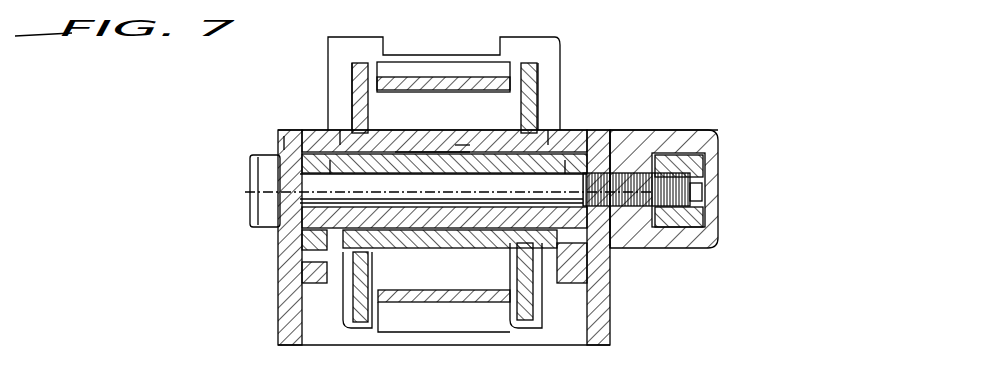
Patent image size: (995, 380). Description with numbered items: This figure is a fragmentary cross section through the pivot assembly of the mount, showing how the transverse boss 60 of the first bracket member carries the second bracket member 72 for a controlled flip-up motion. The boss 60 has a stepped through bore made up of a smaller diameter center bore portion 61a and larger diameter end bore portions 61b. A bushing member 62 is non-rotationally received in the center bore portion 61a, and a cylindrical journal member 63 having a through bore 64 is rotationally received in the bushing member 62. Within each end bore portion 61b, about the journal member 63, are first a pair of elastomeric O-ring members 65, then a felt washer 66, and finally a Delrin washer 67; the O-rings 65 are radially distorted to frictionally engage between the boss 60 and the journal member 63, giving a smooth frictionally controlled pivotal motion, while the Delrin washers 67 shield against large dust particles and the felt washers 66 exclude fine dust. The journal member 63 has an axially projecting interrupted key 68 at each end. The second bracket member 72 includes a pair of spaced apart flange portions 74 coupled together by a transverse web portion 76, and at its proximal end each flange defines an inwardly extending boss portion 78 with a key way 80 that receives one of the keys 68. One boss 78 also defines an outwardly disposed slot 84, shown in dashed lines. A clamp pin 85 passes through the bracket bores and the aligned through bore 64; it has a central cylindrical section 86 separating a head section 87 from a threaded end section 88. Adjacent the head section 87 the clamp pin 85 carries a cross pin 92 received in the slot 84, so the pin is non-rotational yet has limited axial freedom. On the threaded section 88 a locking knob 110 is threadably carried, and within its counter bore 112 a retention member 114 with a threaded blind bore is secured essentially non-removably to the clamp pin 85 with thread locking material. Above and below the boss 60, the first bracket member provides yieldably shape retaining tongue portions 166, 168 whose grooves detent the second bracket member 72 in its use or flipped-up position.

The transverse boss 60 is at (422, 138).
The center bore portion 61a is at (460, 147).
The end bore portions 61b is at (498, 295).
The bushing member 62 is at (442, 170).
The cylindrical journal member 63 is at (403, 138).
The through bore 64 is at (498, 292).
The elastomeric O-ring members 65 is at (402, 168).
The felt washer 66 is at (357, 168).
The Delrin washer 67 is at (340, 125).
The interrupted key 68 is at (312, 133).
The second bracket member 72 is at (327, 262).
The flange portions 74 is at (300, 322).
The transverse web portion 76 is at (520, 342).
The boss portion 78 is at (300, 280).
The key way 80 is at (348, 138).
The slot 84 is at (265, 192).
The clamp pin 85 is at (290, 237).
The central cylindrical section 86 is at (425, 235).
The head section 87 is at (262, 170).
The threaded end section 88 is at (645, 133).
The cross pin 92 is at (285, 138).
The locking knob 110 is at (710, 132).
The counter bore 112 is at (703, 215).
The retention member 114 is at (705, 162).
The tongue portion 166 is at (415, 300).
The tongue portion 168 is at (415, 80).